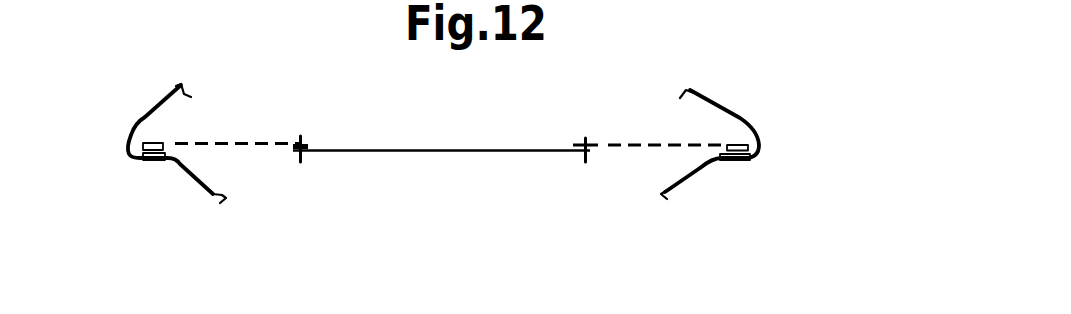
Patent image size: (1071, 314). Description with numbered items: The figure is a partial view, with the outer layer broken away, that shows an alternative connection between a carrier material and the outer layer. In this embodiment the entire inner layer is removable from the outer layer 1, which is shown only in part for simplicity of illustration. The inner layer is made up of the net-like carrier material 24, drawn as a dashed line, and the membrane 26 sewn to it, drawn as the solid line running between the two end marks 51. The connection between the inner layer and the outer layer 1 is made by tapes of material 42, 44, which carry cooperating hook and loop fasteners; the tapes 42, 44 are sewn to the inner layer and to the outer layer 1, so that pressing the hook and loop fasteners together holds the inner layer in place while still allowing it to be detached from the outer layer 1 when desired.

The outer layer 1 is at (210, 194).
The net-like carrier material 24 is at (223, 141).
The membrane 26 is at (437, 152).
The tape of material 42 is at (127, 145).
The tape of material 44 is at (177, 163).
The marker cross 51 is at (301, 142).